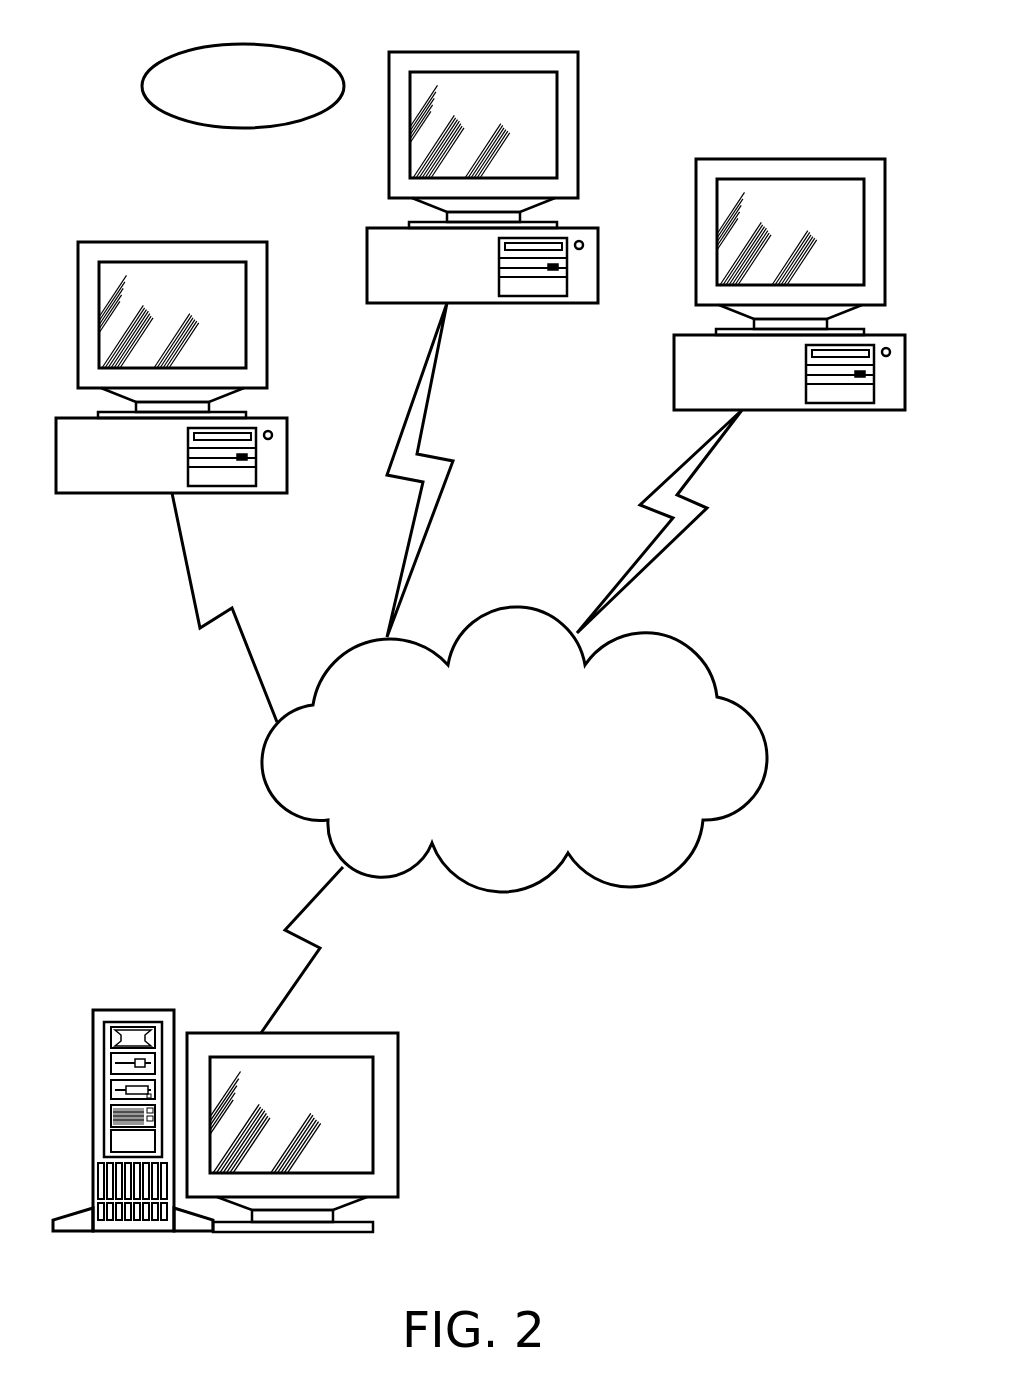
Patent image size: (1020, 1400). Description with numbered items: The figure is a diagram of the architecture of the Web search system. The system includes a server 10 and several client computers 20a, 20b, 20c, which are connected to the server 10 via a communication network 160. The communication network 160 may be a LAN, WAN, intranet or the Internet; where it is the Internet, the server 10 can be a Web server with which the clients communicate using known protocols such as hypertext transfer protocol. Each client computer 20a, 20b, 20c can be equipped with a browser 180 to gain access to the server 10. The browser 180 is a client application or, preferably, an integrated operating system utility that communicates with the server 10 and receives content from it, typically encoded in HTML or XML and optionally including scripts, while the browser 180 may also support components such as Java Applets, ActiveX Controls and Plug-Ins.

The server 10 is at (360, 1033).
The client computer 20a is at (112, 242).
The client computer 20b is at (552, 52).
The client computer 20c is at (857, 159).
The communication network 160 is at (665, 635).
The browser 180 is at (172, 240).